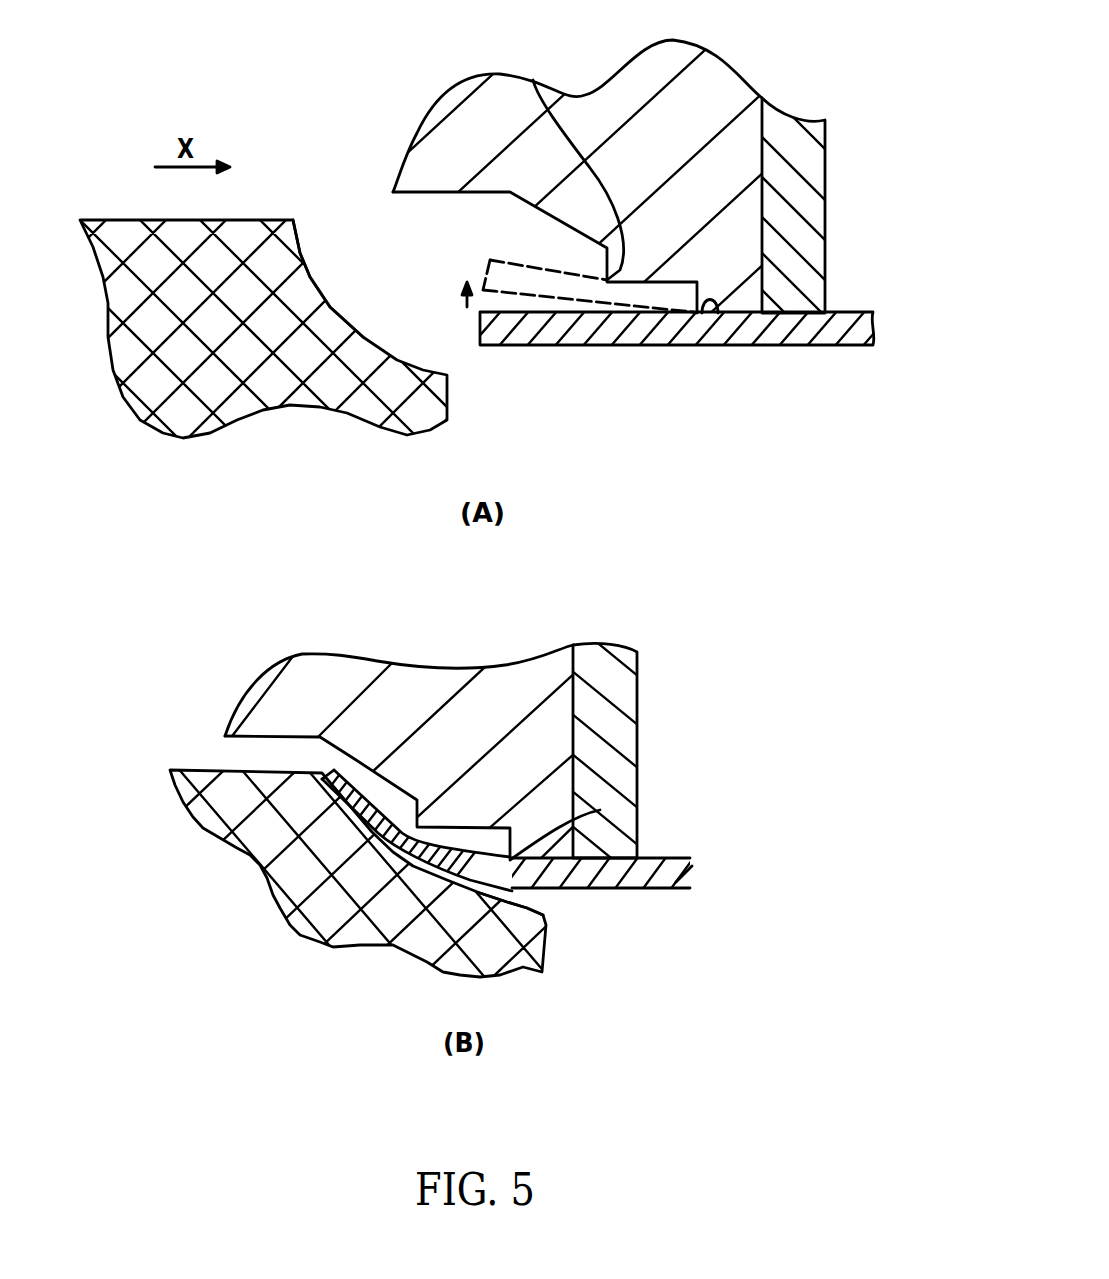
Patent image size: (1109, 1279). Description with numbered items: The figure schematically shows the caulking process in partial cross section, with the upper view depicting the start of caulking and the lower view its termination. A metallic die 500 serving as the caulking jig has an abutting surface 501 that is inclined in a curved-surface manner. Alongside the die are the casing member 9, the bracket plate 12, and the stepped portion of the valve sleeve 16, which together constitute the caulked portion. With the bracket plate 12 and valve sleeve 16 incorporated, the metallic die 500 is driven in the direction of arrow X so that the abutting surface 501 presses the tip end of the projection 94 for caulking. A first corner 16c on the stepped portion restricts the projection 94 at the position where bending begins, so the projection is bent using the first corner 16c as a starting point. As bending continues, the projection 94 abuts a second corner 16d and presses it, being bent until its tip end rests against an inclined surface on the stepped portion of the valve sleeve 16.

The valve sleeve 16 is at (720, 82).
The first corner 16c is at (712, 313).
The second corner 16d is at (533, 80).
The bracket plate 12 is at (812, 198).
The casing member 9 is at (833, 345).
The projection for caulking 94 is at (693, 312).
The metallic die 500 is at (130, 338).
The abutting surface 501 is at (323, 291).